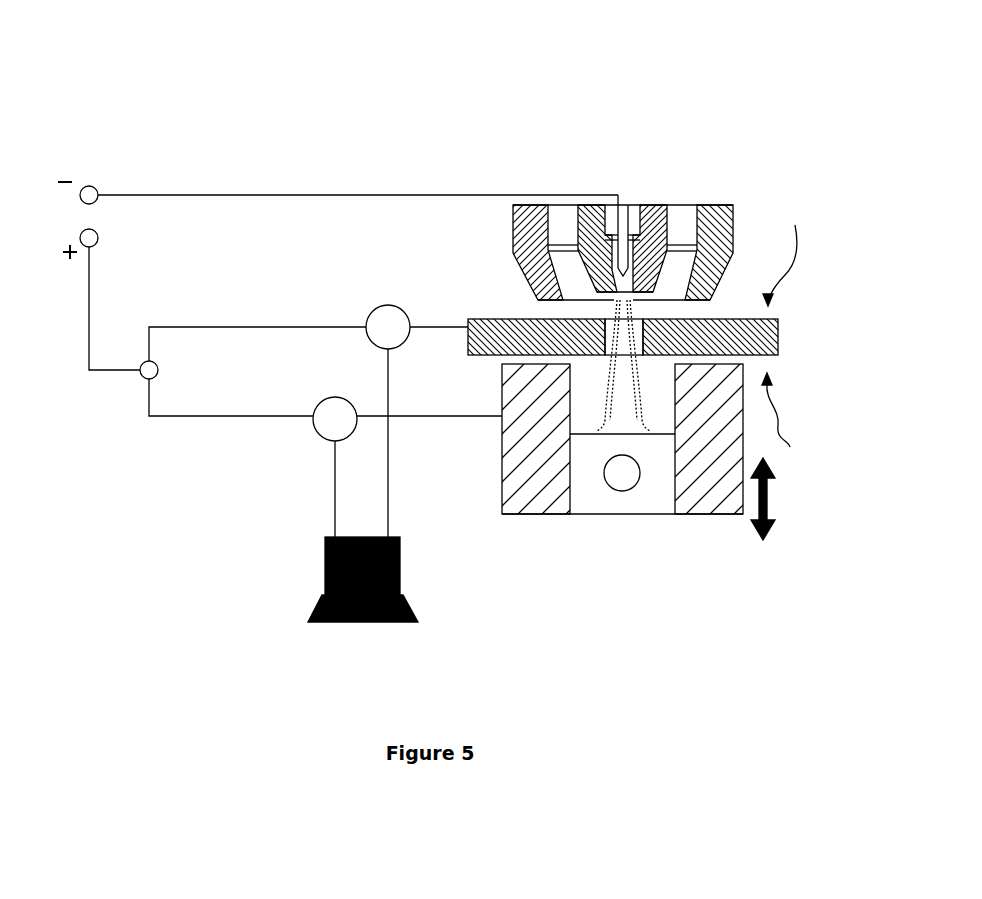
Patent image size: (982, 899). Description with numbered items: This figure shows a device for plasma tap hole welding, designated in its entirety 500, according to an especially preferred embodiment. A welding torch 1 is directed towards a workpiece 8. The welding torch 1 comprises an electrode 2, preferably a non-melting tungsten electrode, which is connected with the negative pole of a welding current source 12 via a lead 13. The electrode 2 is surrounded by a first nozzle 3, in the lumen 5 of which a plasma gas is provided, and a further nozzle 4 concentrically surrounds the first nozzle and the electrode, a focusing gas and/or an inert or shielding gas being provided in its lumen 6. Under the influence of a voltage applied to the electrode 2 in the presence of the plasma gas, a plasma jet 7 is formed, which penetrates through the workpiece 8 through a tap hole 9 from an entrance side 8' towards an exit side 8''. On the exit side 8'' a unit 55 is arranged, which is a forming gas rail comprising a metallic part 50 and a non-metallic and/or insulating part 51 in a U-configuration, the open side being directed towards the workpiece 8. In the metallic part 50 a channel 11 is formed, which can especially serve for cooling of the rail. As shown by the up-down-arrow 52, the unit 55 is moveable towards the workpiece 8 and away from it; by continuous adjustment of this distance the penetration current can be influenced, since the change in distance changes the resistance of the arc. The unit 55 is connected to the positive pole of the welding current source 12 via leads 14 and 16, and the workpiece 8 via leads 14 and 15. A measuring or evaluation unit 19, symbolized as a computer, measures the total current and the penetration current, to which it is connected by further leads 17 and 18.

The device for plasma tap hole welding 500 is at (407, 120).
The welding torch 1 is at (480, 252).
The electrode 2 is at (628, 212).
The first nozzle 3 is at (667, 215).
The further nozzle 4 is at (750, 217).
The lumen of the first nozzle 5 is at (637, 213).
The lumen of the further nozzle 6 is at (563, 215).
The plasma jet 7 is at (624, 381).
The workpiece 8 is at (618, 337).
The entrance side 8' is at (784, 252).
The exit side 8'' is at (783, 424).
The tap hole 9 is at (647, 320).
The channel 11 is at (658, 515).
The welding current source 12 is at (104, 170).
The lead 13 is at (222, 195).
The lead 14 is at (89, 297).
The lead 15 is at (210, 325).
The lead 16 is at (187, 416).
The measurement lead 17 is at (337, 478).
The measurement lead 18 is at (388, 441).
The measuring or evaluation unit 19 is at (400, 547).
The metallic part 50 is at (603, 515).
The non-metallic and/or insulating part 51 is at (533, 515).
The up-down-arrow 52 is at (783, 493).
The unit 55 is at (728, 560).